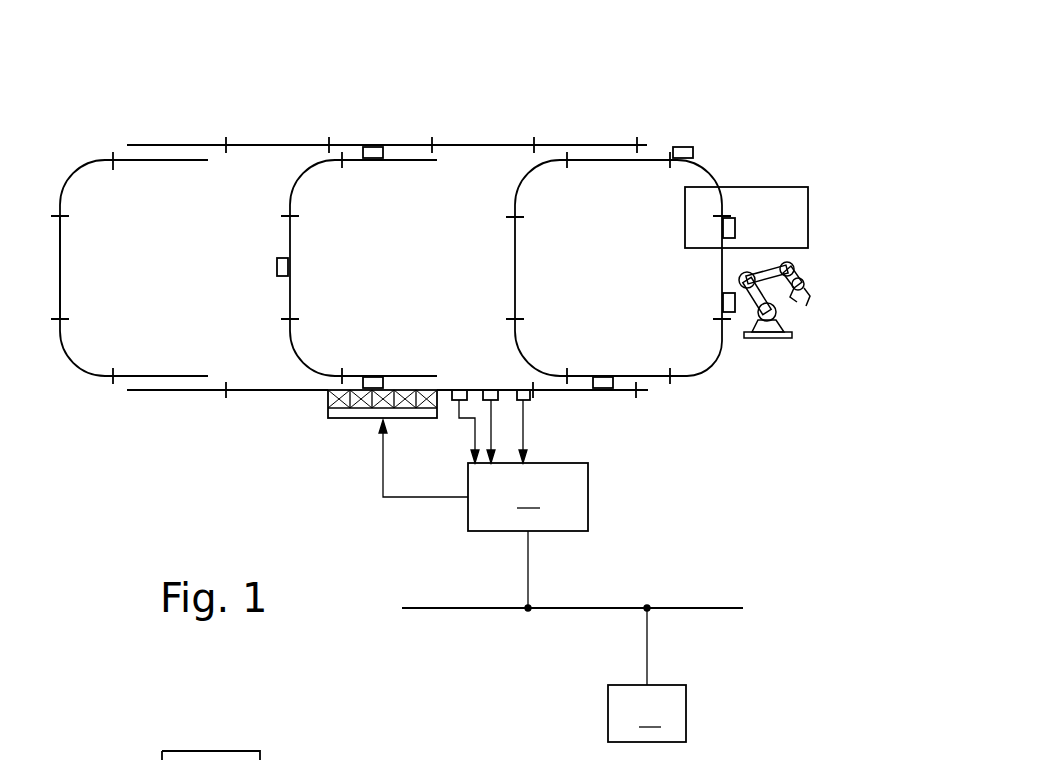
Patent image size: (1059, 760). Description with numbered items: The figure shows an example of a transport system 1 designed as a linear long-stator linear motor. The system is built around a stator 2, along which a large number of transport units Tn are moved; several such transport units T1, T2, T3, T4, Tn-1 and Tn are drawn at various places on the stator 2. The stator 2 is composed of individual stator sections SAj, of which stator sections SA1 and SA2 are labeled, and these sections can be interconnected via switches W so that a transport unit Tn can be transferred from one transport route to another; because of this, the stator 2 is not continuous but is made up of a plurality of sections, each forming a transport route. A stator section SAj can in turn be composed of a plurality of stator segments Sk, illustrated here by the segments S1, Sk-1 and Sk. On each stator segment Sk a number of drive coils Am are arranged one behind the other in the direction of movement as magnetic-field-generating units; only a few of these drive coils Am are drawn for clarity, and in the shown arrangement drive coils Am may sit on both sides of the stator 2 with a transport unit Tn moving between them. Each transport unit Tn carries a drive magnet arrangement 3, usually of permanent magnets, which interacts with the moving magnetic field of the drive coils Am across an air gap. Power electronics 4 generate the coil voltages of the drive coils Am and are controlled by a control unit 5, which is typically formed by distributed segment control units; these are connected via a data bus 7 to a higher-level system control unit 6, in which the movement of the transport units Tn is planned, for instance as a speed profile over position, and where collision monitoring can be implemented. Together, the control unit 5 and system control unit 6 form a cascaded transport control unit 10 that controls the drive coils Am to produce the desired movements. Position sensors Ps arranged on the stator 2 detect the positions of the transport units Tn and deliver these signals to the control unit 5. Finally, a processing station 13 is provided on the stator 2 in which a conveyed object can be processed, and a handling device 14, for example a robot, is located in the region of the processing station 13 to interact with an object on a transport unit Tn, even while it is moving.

The transport system 1 is at (418, 76).
The stator 2 is at (120, 316).
The drive magnet arrangement 3 is at (389, 340).
The power electronics 4 is at (327, 447).
The control unit 5 is at (483, 514).
The system control unit 6 is at (647, 675).
The data bus 7 is at (686, 607).
The transport control unit 10 is at (594, 581).
The processing station 13 is at (808, 205).
The handling device 14 is at (808, 285).
The switch W is at (106, 132).
The stator segment S1 is at (160, 143).
The stator section SA1 is at (64, 251).
The stator section SA2 is at (272, 143).
The stator section SAj is at (204, 393).
The stator segment Sk is at (145, 393).
The stator segment Sk-1 is at (257, 389).
The transport unit Tn is at (372, 147).
The transport unit Tn-1 is at (692, 147).
The transport unit T1 is at (368, 377).
The transport unit T2 is at (605, 377).
The transport unit T3 is at (737, 310).
The transport unit T4 is at (735, 222).
The drive coil Am is at (330, 403).
The position sensor Ps is at (535, 400).